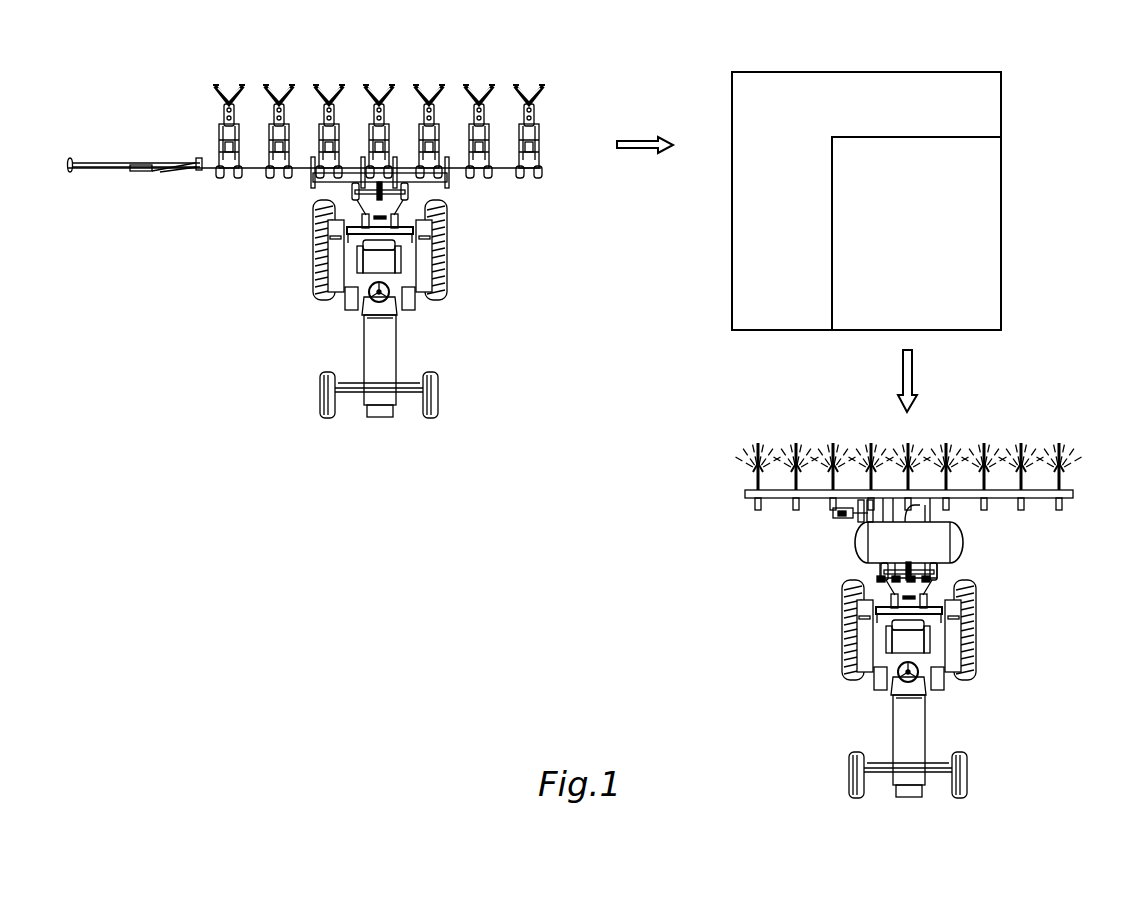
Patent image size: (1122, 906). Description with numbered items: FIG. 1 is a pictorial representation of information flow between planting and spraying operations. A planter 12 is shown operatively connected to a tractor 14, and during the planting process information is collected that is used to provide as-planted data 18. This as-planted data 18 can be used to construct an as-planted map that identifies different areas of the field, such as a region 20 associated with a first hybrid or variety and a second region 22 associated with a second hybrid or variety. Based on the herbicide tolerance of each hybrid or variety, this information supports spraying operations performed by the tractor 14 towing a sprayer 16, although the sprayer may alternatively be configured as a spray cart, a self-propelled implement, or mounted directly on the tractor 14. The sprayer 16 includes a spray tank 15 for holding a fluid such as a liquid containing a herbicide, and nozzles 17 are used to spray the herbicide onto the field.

The planter 12 is at (222, 120).
The tractor 14 is at (361, 347).
The spray tank 15 is at (956, 545).
The sprayer 16 is at (848, 524).
The nozzles 17 is at (756, 472).
The as-planted data 18 is at (908, 184).
The region 20 is at (988, 188).
The second region 22 is at (752, 82).